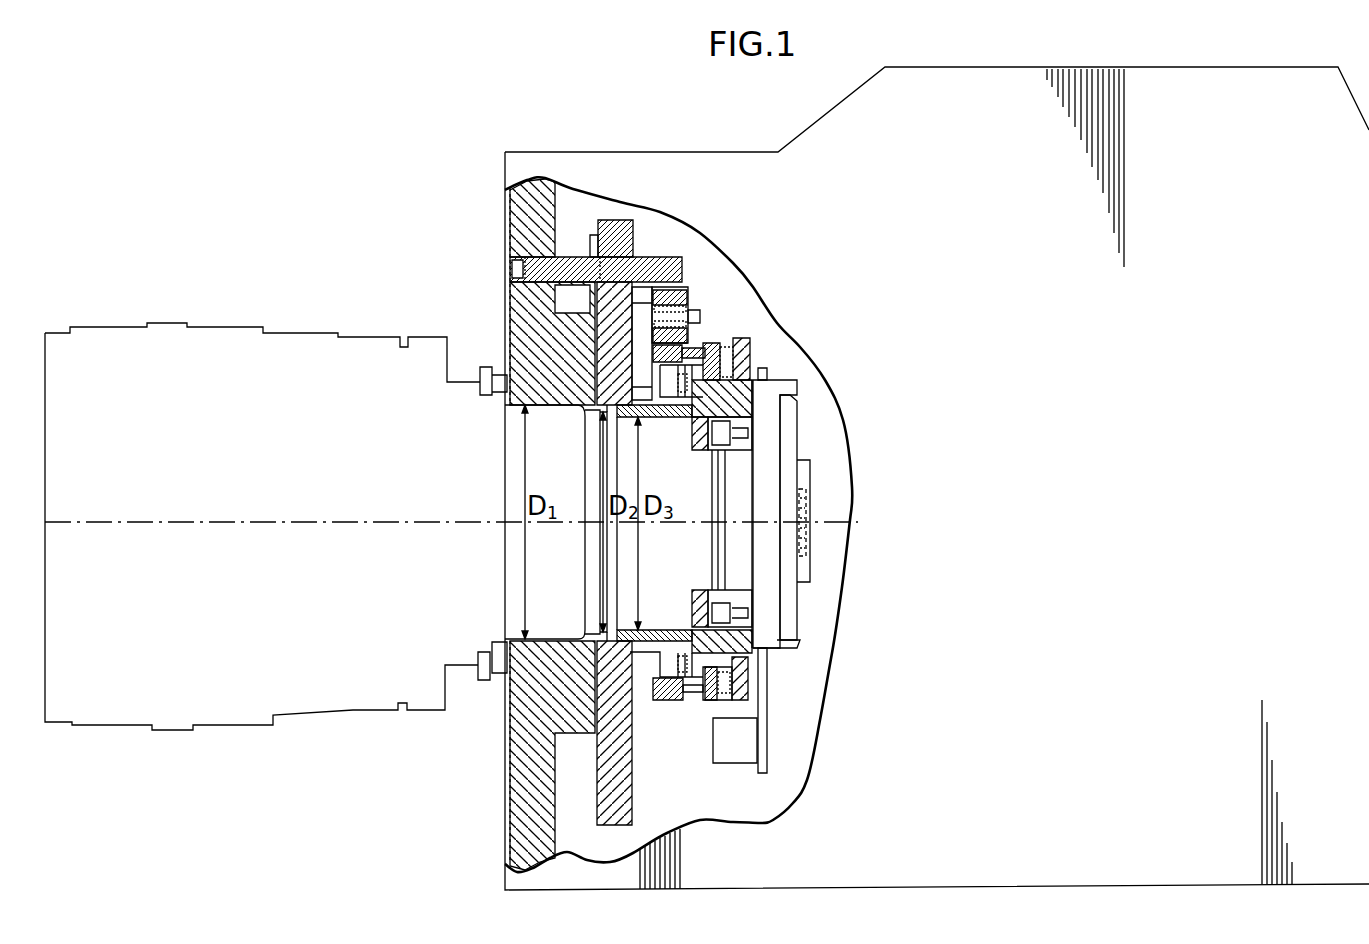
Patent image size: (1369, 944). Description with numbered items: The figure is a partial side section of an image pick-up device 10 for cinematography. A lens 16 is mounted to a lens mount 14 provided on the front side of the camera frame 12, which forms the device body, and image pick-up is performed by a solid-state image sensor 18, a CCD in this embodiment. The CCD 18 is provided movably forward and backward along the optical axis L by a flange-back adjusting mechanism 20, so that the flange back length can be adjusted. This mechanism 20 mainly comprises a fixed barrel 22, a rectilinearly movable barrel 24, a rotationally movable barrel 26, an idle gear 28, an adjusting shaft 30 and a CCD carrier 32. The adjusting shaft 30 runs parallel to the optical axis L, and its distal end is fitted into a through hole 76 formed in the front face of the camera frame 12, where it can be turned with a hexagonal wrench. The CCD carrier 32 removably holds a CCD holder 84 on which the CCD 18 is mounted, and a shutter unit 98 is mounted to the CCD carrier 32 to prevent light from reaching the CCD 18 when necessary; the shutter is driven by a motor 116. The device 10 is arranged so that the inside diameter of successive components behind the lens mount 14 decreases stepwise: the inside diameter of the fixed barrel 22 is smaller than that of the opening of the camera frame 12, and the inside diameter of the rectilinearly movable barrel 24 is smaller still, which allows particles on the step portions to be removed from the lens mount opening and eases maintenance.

The image pick-up device 10 is at (320, 108).
The camera frame 12 is at (528, 212).
The lens mount 14 is at (490, 368).
The lens 16 is at (207, 333).
The solid-state image sensor 18 is at (800, 512).
The flange-back adjusting mechanism 20 is at (745, 318).
The fixed barrel 22 is at (585, 412).
The rectilinearly movable barrel 24 is at (667, 417).
The rotationally movable barrel 26 is at (688, 702).
The idle gear 28 is at (690, 297).
The adjusting shaft 30 is at (645, 252).
The CCD carrier 32 is at (777, 385).
The through hole 76 is at (512, 268).
The CCD holder 84 is at (790, 424).
The shutter unit 98 is at (766, 684).
The motor 116 is at (733, 757).
The optical axis L is at (202, 520).